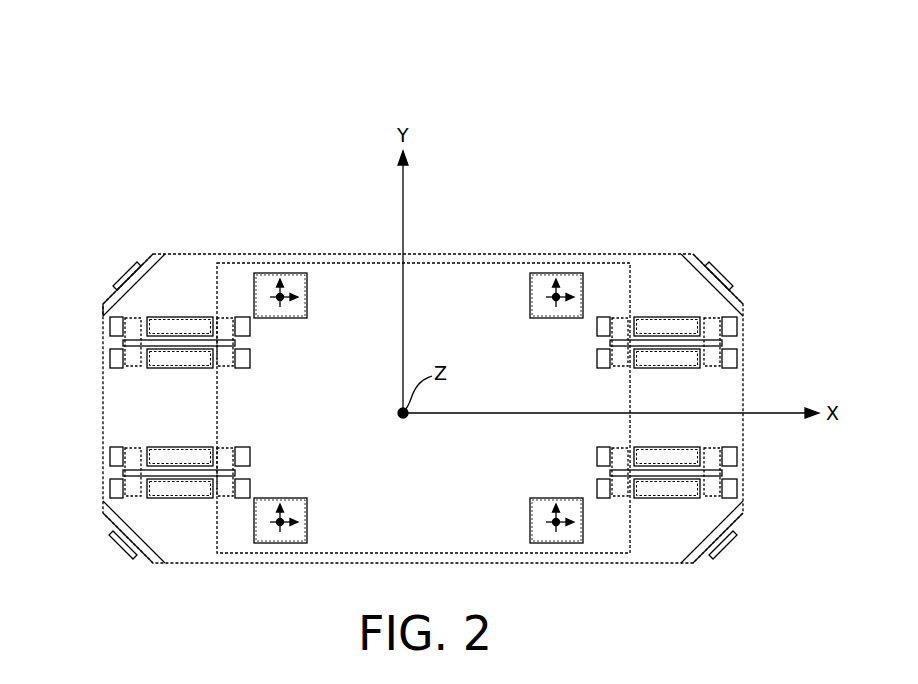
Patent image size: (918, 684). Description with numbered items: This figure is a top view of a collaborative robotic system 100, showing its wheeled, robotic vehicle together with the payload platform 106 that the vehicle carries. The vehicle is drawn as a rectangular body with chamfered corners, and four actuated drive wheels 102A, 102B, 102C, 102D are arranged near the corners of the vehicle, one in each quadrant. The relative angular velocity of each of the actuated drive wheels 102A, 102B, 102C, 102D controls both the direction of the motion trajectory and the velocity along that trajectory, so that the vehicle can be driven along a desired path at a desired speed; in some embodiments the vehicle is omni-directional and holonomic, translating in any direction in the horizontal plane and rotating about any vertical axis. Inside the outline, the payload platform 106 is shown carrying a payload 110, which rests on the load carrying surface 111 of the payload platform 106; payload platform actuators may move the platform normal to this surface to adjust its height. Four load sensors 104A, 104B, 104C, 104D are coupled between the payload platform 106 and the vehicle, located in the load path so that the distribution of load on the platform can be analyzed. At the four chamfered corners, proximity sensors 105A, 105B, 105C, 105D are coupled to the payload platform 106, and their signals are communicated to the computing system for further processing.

The collaborative robotic system 100 is at (96, 55).
The actuated drive wheel 102A is at (252, 474).
The actuated drive wheel 102B is at (595, 474).
The actuated drive wheel 102C is at (252, 343).
The actuated drive wheel 102D is at (595, 343).
The load sensor 104A is at (307, 521).
The load sensor 104B is at (530, 521).
The load sensor 104C is at (307, 296).
The load sensor 104D is at (530, 296).
The proximity sensor 105A is at (122, 542).
The proximity sensor 105B is at (725, 542).
The proximity sensor 105C is at (122, 275).
The proximity sensor 105D is at (725, 275).
The payload platform 106 is at (642, 253).
The payload 110 is at (217, 385).
The load carrying surface 111 is at (184, 420).